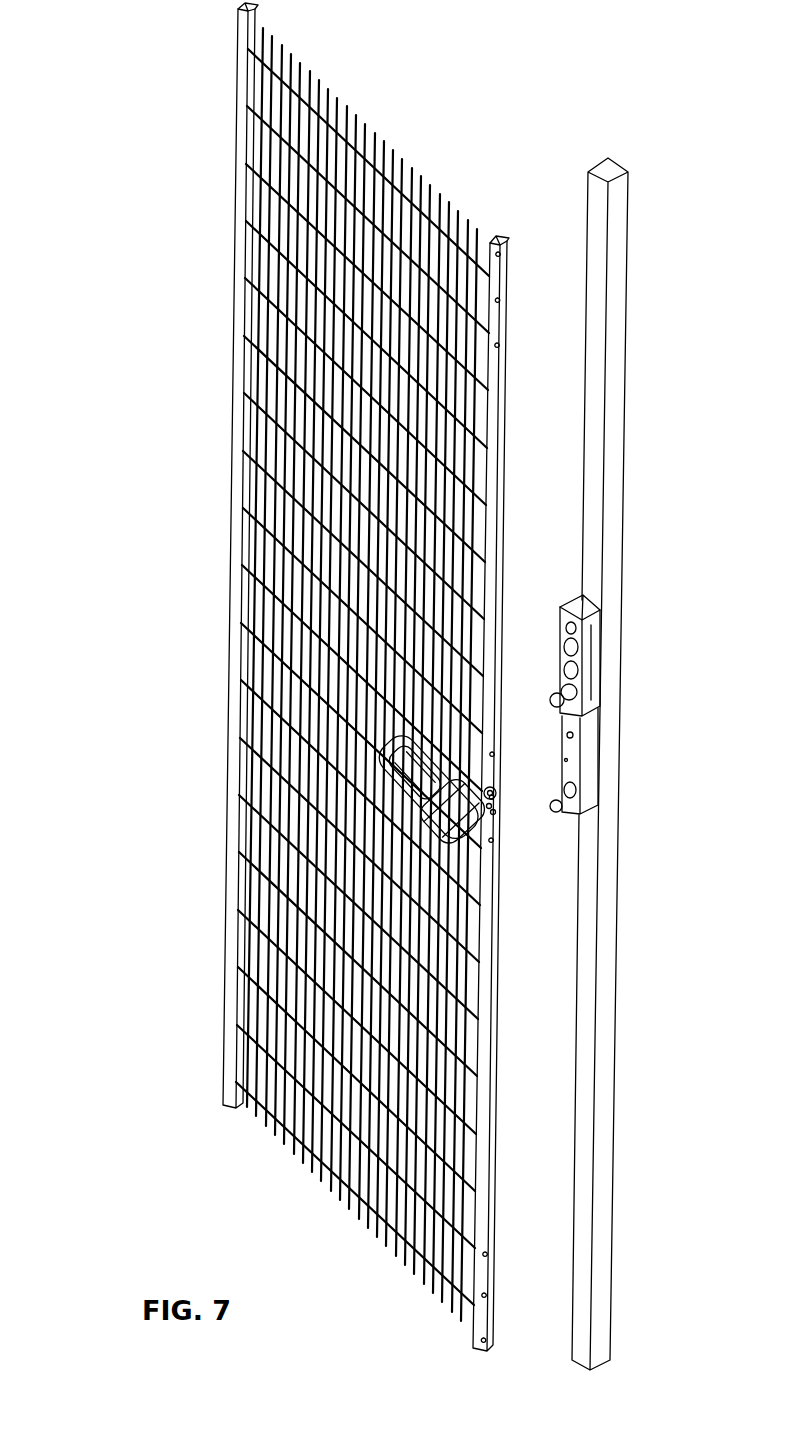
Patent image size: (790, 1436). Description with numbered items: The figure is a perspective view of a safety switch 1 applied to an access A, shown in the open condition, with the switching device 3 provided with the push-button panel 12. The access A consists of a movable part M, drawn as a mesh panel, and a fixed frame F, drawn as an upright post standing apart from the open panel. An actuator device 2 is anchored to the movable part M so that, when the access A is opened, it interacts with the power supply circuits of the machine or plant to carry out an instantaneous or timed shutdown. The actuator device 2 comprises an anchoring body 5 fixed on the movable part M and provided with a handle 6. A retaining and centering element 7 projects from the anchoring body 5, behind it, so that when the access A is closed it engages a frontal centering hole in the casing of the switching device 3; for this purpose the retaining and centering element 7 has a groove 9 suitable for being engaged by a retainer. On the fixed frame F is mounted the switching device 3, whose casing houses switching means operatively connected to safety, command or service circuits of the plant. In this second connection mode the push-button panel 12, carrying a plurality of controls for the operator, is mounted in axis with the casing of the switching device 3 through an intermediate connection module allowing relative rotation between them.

The movable part M is at (236, 82).
The access A is at (484, 163).
The fixed frame F is at (627, 212).
The safety switch 1 is at (625, 814).
The actuator device 2 is at (395, 770).
The switching device 3 is at (593, 758).
The anchoring body 5 is at (487, 876).
The handle 6 is at (228, 821).
The retaining and centering element 7 is at (496, 810).
The groove 9 is at (491, 786).
The push-button panel 12 is at (595, 660).